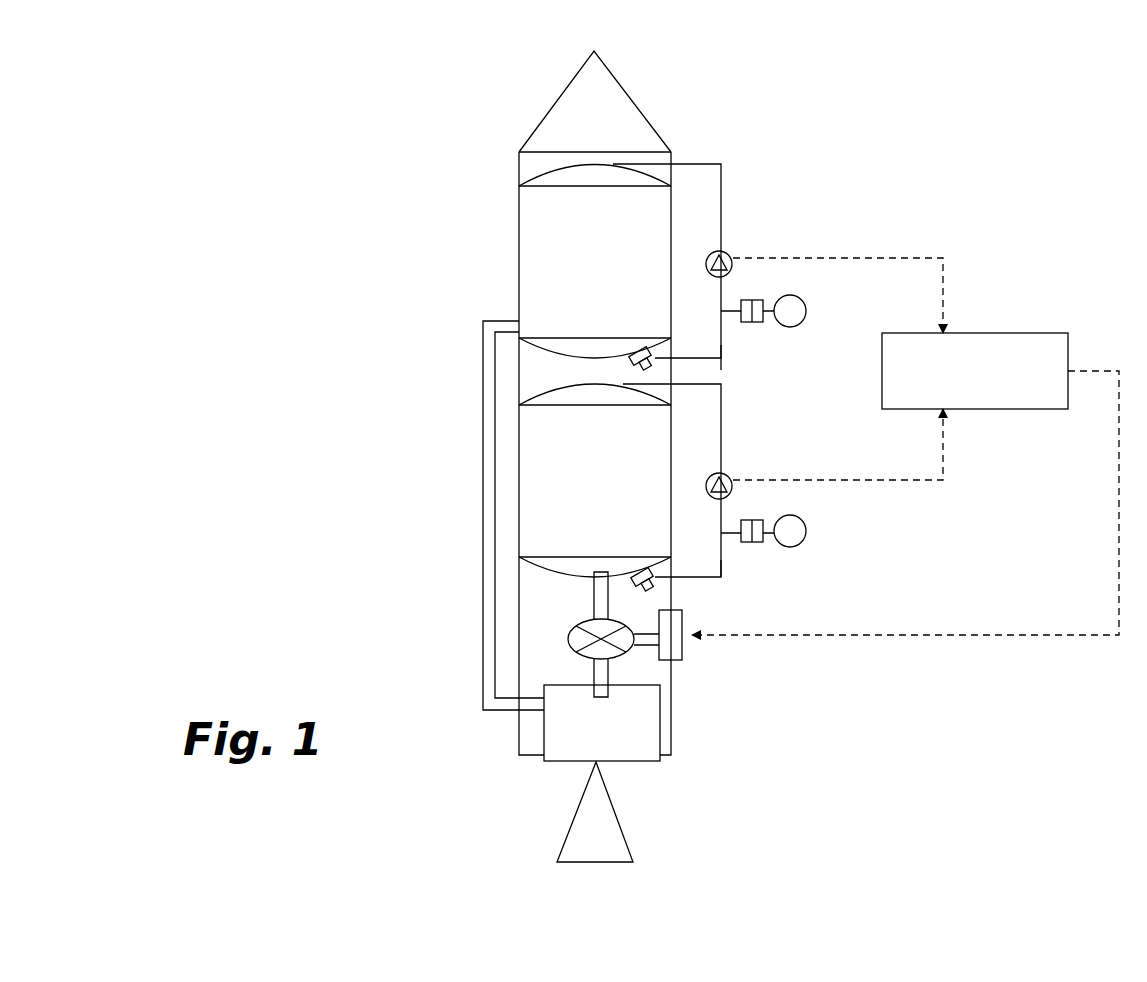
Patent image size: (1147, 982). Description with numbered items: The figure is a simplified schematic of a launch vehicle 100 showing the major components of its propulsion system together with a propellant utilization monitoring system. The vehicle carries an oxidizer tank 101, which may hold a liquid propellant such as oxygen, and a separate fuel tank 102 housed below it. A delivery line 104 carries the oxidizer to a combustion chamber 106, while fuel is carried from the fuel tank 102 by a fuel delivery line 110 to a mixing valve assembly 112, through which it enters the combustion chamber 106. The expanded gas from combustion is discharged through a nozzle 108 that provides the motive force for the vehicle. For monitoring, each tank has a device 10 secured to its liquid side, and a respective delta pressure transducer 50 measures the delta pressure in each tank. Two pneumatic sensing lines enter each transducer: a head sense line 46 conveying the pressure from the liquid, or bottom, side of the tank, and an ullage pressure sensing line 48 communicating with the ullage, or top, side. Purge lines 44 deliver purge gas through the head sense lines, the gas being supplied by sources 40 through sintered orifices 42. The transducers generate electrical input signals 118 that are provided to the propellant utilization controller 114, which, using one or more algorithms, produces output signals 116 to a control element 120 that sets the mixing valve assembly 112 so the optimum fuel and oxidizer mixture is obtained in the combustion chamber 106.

The launch vehicle 100 is at (478, 190).
The oxidizer tank 101 is at (519, 240).
The fuel tank 102 is at (519, 499).
The delivery line 104 is at (483, 403).
The combustion chamber 106 is at (660, 730).
The nozzle 108 is at (572, 823).
The fuel delivery line 110 is at (595, 597).
The mixing valve assembly 112 is at (570, 646).
The propellant utilization controller 114 is at (1022, 333).
The output signals 116 is at (962, 637).
The input signals 118 is at (893, 257).
The control element 120 is at (683, 660).
The device 10 is at (645, 352).
The purge gas sources 40 is at (790, 327).
The sintered orifices 42 is at (750, 327).
The purge lines 44 is at (720, 358).
The head sense line 46 is at (722, 293).
The ullage pressure sensing line 48 is at (722, 176).
The delta pressure transducers 50 is at (722, 250).